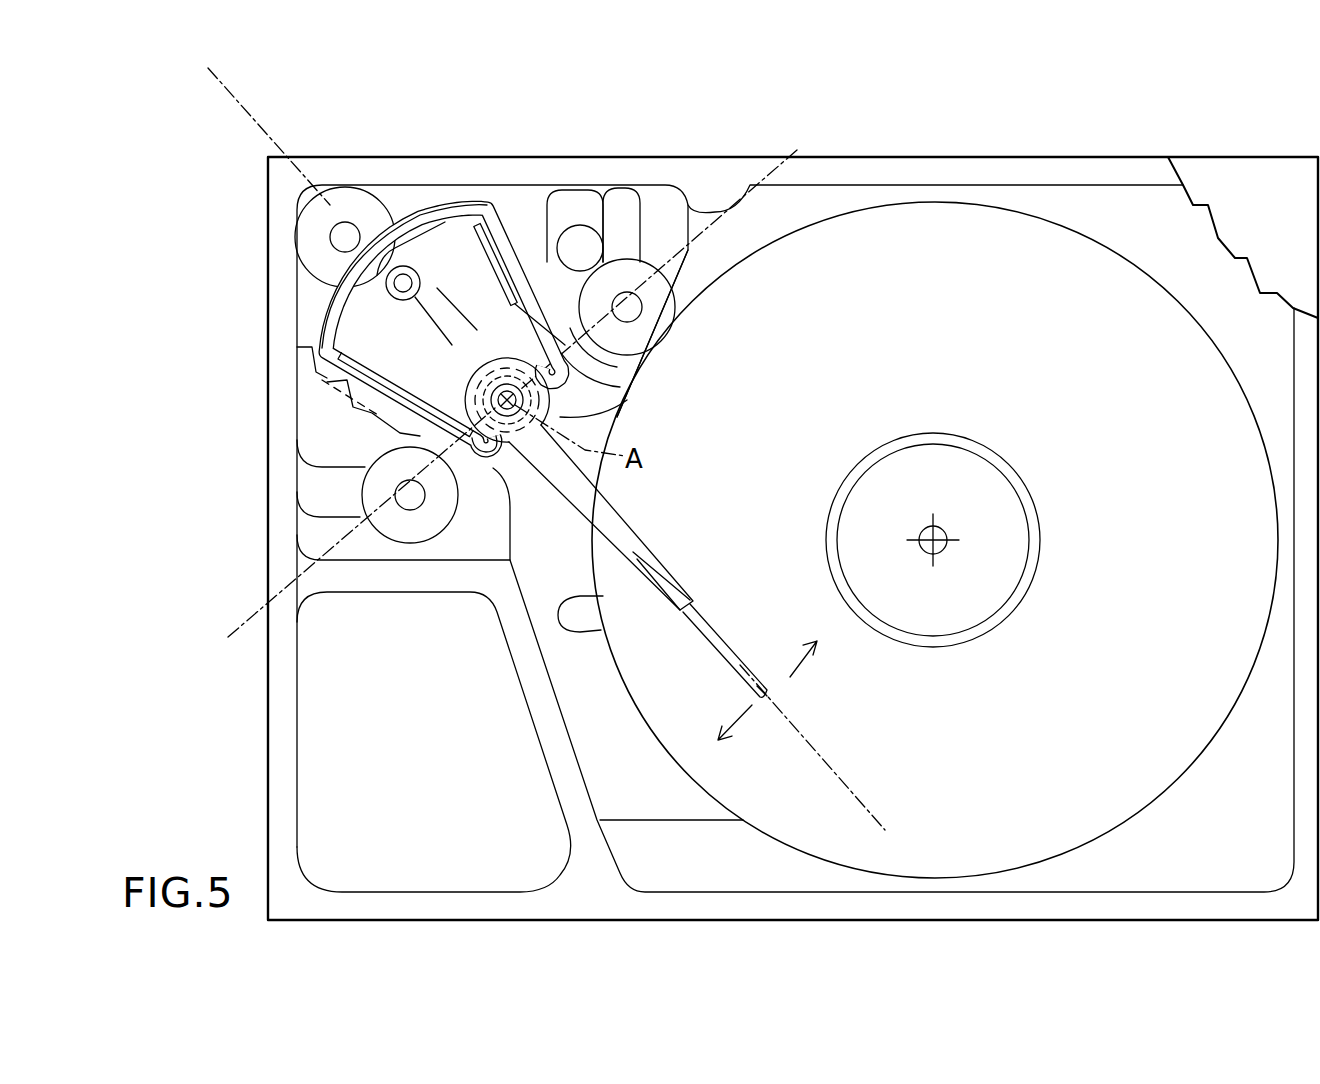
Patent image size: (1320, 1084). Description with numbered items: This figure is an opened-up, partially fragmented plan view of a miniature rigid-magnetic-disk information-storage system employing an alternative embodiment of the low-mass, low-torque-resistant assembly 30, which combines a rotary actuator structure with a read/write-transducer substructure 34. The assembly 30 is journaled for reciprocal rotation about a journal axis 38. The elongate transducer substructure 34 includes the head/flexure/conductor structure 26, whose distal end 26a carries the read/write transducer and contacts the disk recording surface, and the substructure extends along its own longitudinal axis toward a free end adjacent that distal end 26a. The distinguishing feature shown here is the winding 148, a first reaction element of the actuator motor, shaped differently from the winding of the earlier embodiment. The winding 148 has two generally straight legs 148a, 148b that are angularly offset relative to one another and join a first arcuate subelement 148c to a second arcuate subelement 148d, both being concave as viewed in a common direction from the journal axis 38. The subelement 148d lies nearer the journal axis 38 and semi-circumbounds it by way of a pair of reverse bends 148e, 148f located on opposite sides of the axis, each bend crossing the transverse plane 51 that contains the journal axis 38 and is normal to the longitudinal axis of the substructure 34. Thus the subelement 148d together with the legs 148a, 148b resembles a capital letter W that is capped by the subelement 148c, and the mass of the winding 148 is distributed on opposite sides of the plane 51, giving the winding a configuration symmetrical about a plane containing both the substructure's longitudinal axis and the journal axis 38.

The winding 148 is at (312, 323).
The leg 148a is at (373, 388).
The leg 148b is at (507, 247).
The first arcuate subelement 148c is at (427, 228).
The second arcuate subelement 148d is at (450, 372).
The reverse bend 148e is at (497, 470).
The reverse bend 148f is at (627, 402).
The journal axis 38 is at (508, 398).
The assembly 30 is at (636, 418).
The read/write-transducer substructure 34 is at (640, 496).
The head/flexure/conductor structure 26 is at (750, 662).
The distal end 26a is at (764, 692).
The transverse plane 51 is at (303, 578).